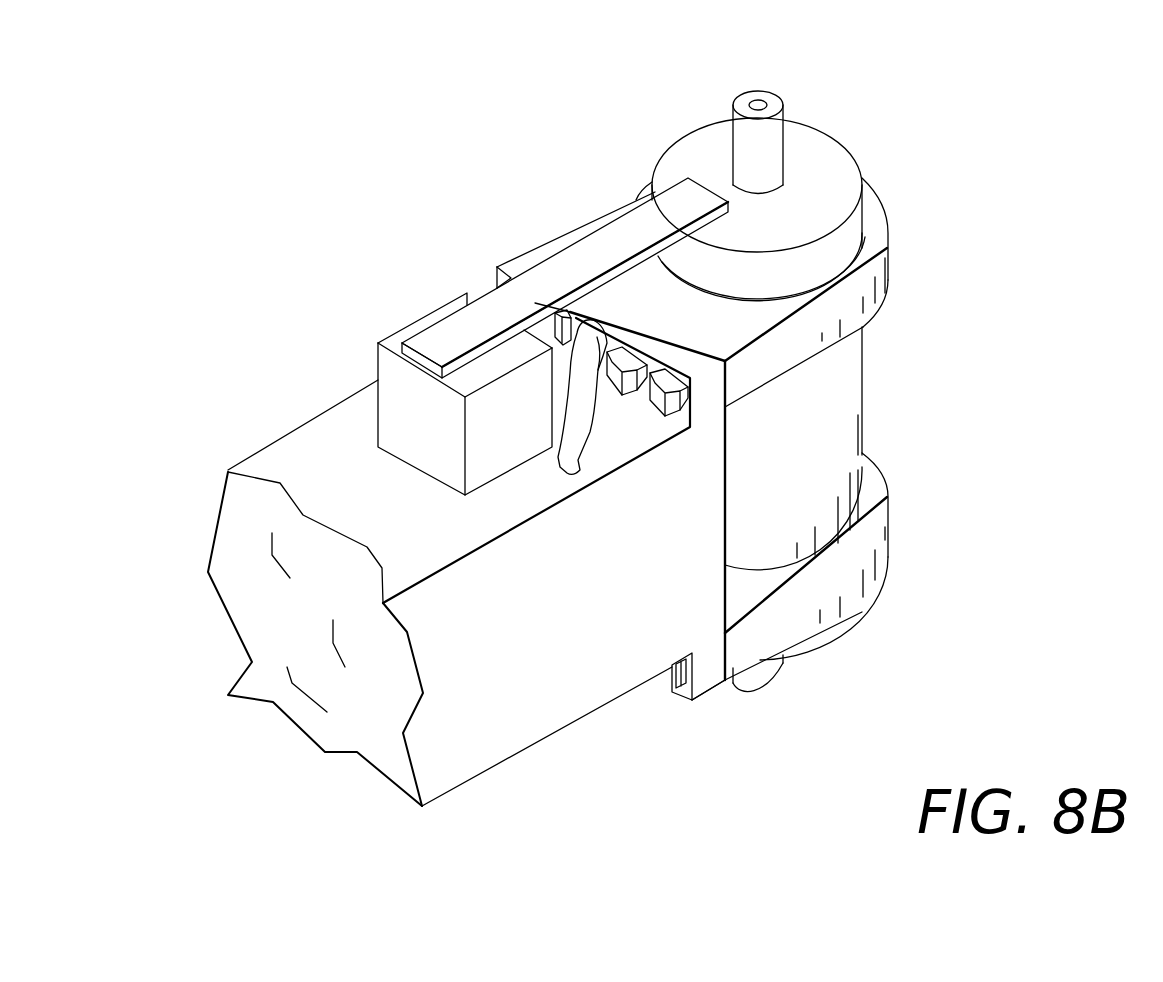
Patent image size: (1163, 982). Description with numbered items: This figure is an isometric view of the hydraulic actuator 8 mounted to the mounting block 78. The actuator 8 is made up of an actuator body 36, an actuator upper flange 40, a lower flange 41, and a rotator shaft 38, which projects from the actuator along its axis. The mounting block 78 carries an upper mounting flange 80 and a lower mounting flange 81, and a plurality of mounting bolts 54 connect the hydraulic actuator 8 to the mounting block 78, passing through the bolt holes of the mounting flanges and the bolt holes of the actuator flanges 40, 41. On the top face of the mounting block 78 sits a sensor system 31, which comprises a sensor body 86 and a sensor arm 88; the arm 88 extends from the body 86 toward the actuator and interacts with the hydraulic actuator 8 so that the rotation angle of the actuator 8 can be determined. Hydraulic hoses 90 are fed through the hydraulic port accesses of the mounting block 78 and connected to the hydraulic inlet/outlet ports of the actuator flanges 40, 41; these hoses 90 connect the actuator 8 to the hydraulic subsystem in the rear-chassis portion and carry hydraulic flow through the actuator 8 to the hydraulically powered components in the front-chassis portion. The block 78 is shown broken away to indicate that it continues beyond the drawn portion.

The hydraulic actuator 8 is at (628, 98).
The sensor system 31 is at (388, 310).
The actuator body 36 is at (863, 413).
The rotator shaft 38 is at (772, 110).
The actuator upper flange 40 is at (748, 331).
The lower flange 41 is at (766, 606).
The mounting bolts 54 is at (628, 395).
The mounting block 78 is at (258, 738).
The upper mounting flange 80 is at (497, 267).
The lower mounting flange 81 is at (710, 690).
The sensor body 86 is at (412, 422).
The sensor arm 88 is at (590, 257).
The hydraulic hoses 90 is at (580, 447).